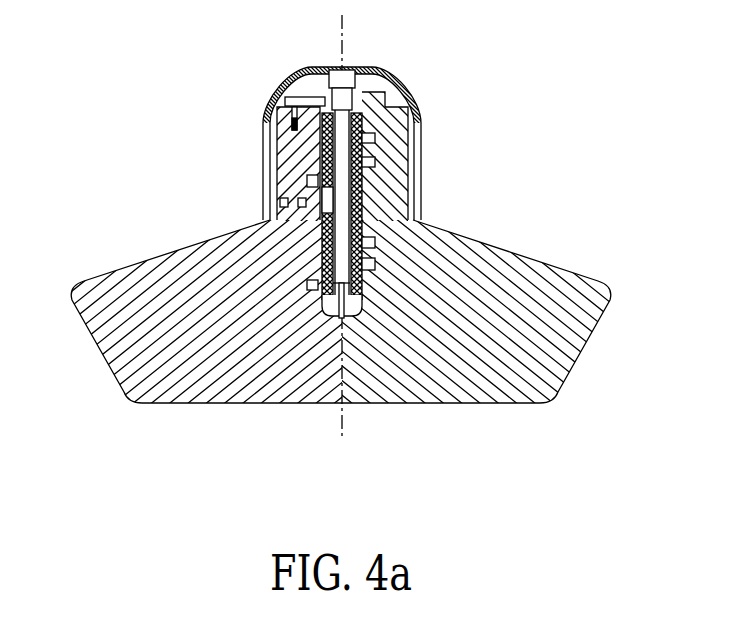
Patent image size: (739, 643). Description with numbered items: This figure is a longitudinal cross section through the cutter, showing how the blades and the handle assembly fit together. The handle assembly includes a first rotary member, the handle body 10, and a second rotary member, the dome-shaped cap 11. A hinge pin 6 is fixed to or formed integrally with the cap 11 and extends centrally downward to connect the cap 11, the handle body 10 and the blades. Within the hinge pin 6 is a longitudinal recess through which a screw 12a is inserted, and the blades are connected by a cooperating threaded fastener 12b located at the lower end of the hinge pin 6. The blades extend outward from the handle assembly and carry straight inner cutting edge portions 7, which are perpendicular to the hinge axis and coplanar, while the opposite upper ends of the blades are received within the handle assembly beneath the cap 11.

The cap 11 is at (409, 90).
The hinge pin 6 is at (342, 152).
The handle body 10 is at (412, 215).
The inner cutting edge portions 7 is at (158, 418).
The screw 12a is at (370, 312).
The threaded fastener 12b is at (421, 373).